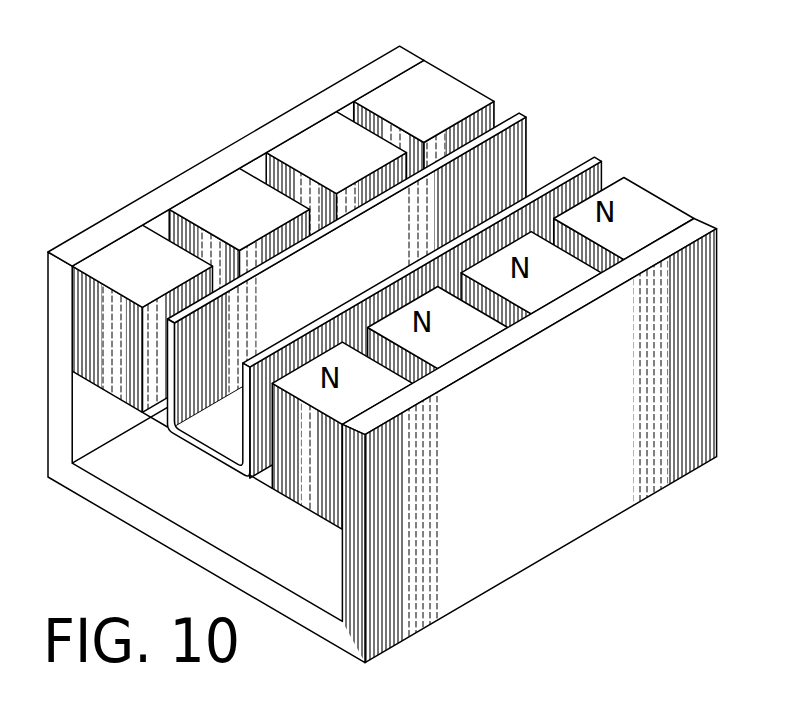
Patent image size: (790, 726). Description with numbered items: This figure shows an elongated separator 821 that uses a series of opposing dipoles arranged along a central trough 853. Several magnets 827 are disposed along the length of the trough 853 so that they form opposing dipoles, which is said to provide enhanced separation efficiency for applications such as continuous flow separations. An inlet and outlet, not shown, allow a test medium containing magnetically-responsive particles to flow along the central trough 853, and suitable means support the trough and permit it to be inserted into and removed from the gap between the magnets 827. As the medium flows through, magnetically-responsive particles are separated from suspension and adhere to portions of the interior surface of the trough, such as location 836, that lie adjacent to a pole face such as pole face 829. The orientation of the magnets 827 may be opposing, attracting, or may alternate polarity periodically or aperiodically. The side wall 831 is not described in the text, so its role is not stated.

The elongated separator 821 is at (275, 98).
The magnets 827 is at (417, 80).
The pole face 829 is at (479, 119).
The side wall 831 is at (203, 173).
The location 836 is at (428, 201).
The central trough 853 is at (179, 438).